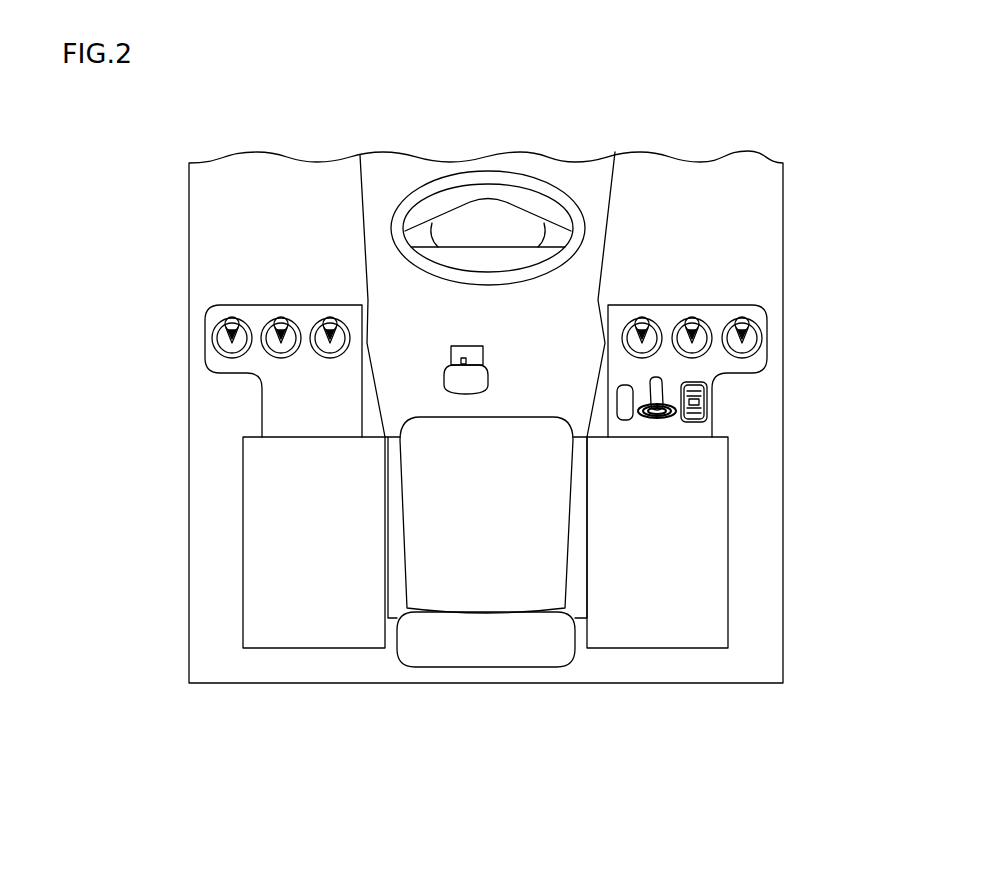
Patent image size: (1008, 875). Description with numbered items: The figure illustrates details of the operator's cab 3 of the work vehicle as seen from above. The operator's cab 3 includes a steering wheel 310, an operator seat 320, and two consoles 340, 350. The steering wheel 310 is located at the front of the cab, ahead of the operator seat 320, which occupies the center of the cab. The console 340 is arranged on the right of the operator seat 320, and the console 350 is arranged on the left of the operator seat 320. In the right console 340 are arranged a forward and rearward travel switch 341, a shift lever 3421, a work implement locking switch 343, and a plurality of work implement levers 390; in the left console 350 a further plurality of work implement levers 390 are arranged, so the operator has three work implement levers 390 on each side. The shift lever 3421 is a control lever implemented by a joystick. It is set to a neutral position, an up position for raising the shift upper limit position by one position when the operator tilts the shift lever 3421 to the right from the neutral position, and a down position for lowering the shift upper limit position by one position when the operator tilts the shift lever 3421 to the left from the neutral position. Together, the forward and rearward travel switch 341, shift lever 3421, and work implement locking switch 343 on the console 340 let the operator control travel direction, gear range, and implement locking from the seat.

The operator's cab 3 is at (137, 110).
The steering wheel 310 is at (488, 218).
The operator seat 320 is at (488, 560).
The console 340 is at (685, 428).
The forward and rearward travel switch 341 is at (712, 385).
The shift lever 3421 is at (660, 383).
The work implement locking switch 343 is at (633, 413).
The console 350 is at (327, 413).
The work implement levers 390 is at (232, 323).